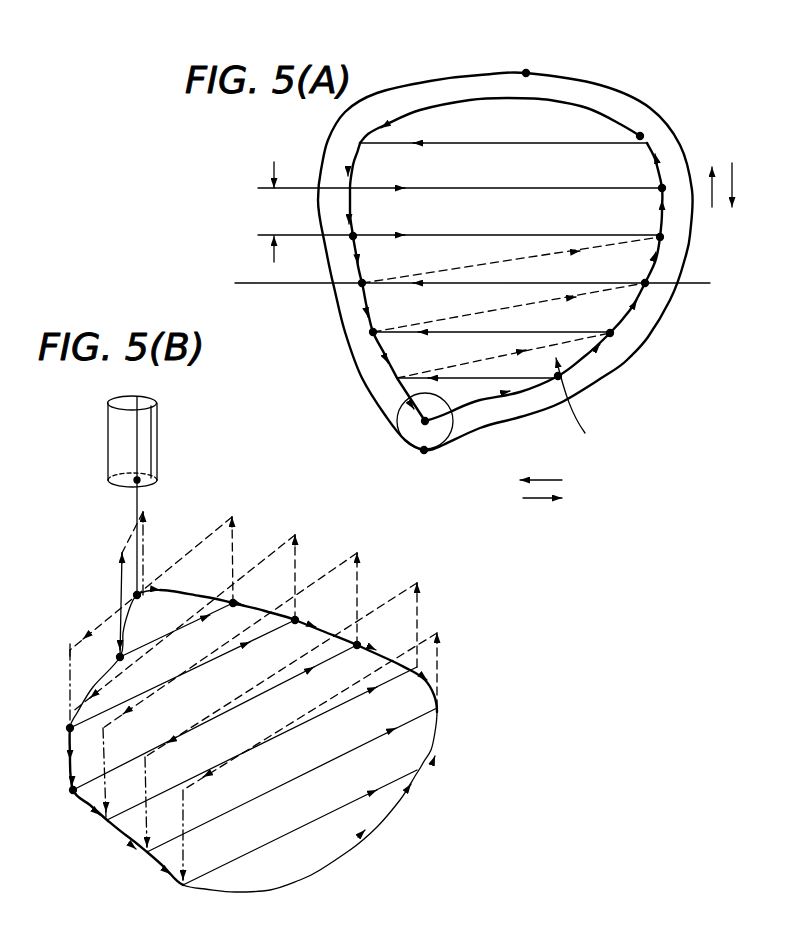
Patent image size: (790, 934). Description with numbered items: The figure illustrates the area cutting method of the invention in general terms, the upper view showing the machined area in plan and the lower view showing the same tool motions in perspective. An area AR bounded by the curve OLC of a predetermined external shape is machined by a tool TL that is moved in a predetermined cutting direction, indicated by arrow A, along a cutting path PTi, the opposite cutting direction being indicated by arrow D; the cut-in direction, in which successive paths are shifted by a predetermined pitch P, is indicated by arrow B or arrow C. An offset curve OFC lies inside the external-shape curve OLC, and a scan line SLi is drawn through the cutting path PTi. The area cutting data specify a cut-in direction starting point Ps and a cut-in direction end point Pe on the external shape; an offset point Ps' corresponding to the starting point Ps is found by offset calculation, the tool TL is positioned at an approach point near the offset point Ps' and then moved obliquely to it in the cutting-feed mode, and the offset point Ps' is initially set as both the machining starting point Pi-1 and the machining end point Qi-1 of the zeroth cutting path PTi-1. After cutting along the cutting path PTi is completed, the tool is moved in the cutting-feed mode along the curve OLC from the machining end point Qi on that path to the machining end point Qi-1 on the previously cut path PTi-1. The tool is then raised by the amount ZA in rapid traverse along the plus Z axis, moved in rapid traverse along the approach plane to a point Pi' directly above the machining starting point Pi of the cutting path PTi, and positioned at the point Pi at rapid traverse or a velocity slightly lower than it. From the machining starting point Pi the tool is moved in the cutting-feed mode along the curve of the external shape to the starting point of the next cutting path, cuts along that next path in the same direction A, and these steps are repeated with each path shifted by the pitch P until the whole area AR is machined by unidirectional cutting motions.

In FIG. 5A, the curve of the external shape OLC is at (603, 378).
In FIG. 5A, the offset curve of the outline OFC is at (587, 108).
In FIG. 5A, the scan line i SLi is at (263, 284).
In FIG. 5A, the pitch in the cut-in direction P is at (274, 212).
In FIG. 5A, the cut-in direction end point Pe is at (526, 73).
In FIG. 5A, the cut-in direction starting point Ps is at (422, 479).
In FIG. 5A, the offset point Ps' is at (388, 441).
In FIG. 5A, the machining starting point on the cutting path Pi is at (668, 308).
In FIG. 5B, the machining starting point on the cutting path Pi is at (57, 731).
In FIG. 5A, the machining starting point on the previously cut cutting path Pi-1 is at (612, 336).
In FIG. 5B, the machining starting point on the previously cut cutting path Pi-1 is at (134, 670).
In FIG. 5B, the point directly above the machining starting point Pi' is at (51, 656).
In FIG. 5A, the machining end point on the cutting path Qi is at (358, 287).
In FIG. 5B, the machining end point on the cutting path Qi is at (309, 610).
In FIG. 5A, the machining end point on the previously cut cutting path Qi-1 is at (371, 335).
In FIG. 5B, the machining end point on the previously cut cutting path Qi-1 is at (251, 593).
In FIG. 5A, the cutting path PTi is at (514, 284).
In FIG. 5B, the cutting path PTi is at (207, 663).
In FIG. 5A, the previously cut cutting path PTi-1 is at (430, 336).
In FIG. 5B, the previously cut cutting path PTi-1 is at (190, 624).
In FIG. 5A, the tool TL is at (443, 430).
In FIG. 5B, the tool TL is at (158, 443).
In FIG. 5A, the area AR is at (584, 406).
In FIG. 5B, the height of the approach plane ZA is at (212, 560).
In FIG. 5A, the cutting direction arrow A is at (551, 481).
In FIG. 5A, the cut-in direction arrow B is at (713, 201).
In FIG. 5A, the cut-in direction arrow C is at (731, 175).
In FIG. 5A, the cutting direction arrow D is at (531, 499).